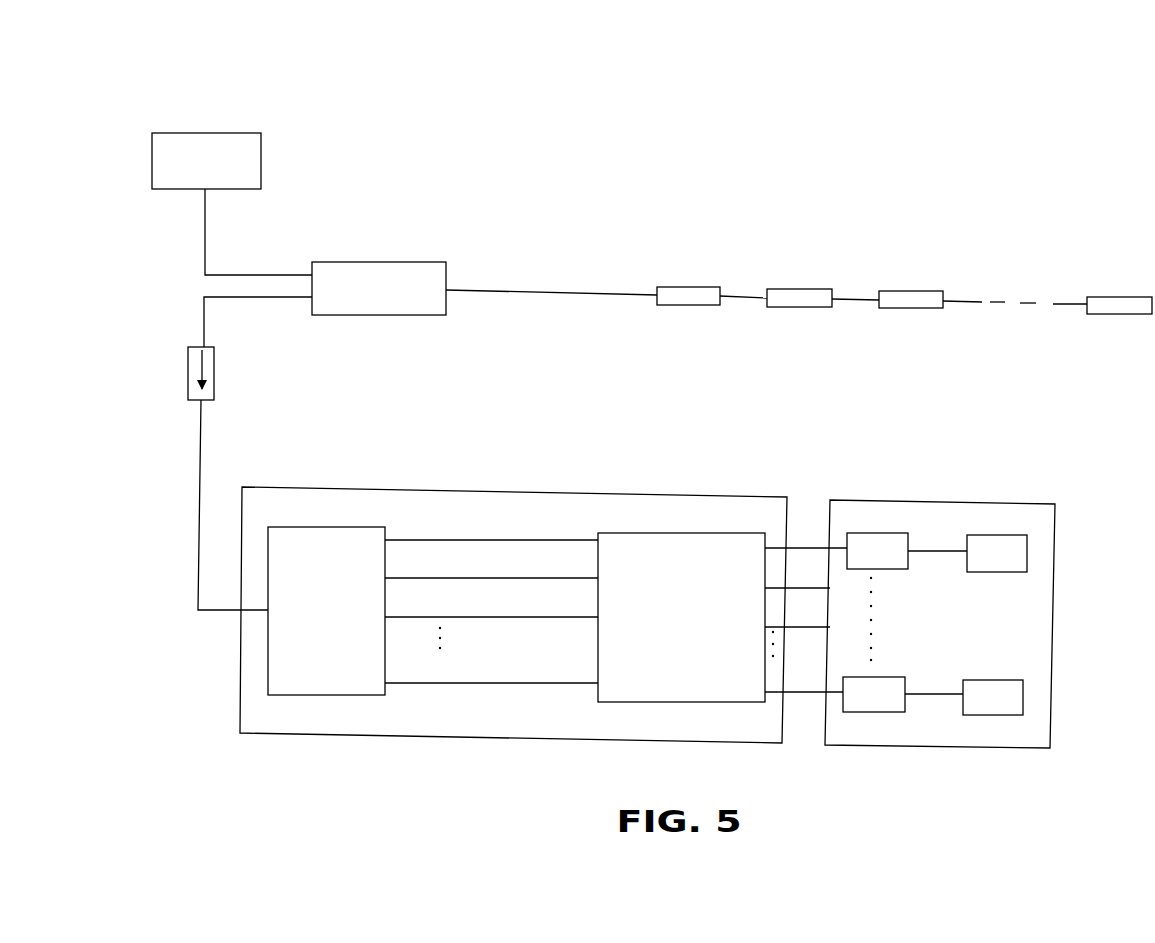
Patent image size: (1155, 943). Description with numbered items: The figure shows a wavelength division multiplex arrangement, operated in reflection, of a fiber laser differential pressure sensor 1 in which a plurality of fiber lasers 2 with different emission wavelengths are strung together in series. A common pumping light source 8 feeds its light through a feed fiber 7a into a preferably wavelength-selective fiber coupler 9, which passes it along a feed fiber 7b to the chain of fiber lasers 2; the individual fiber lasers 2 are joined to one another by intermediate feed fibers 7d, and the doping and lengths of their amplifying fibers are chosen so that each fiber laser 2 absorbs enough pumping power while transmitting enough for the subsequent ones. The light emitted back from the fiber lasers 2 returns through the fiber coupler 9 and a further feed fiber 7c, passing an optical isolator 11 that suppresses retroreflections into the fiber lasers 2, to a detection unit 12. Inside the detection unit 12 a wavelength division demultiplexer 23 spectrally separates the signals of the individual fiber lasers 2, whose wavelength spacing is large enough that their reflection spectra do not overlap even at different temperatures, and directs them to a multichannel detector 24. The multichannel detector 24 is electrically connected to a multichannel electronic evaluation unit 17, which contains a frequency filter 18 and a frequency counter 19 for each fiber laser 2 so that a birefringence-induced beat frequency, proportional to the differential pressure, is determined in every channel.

The fiber laser differential pressure sensor 1 is at (208, 77).
The fiber laser 2 is at (688, 296).
The feed fiber 7a is at (272, 275).
The feed fiber 7b is at (522, 290).
The feed fiber 7c is at (275, 298).
The feed fiber 7d is at (735, 296).
The pumping light source 8 is at (197, 176).
The fiber coupler 9 is at (368, 306).
The optical isolator 11 is at (197, 362).
The detection unit 12 is at (278, 731).
The electronic evaluation unit 17 is at (831, 743).
The frequency filter 18 is at (861, 567).
The frequency counter 19 is at (980, 568).
The wavelength division demultiplexer 23 is at (343, 632).
The multichannel detector 24 is at (666, 639).